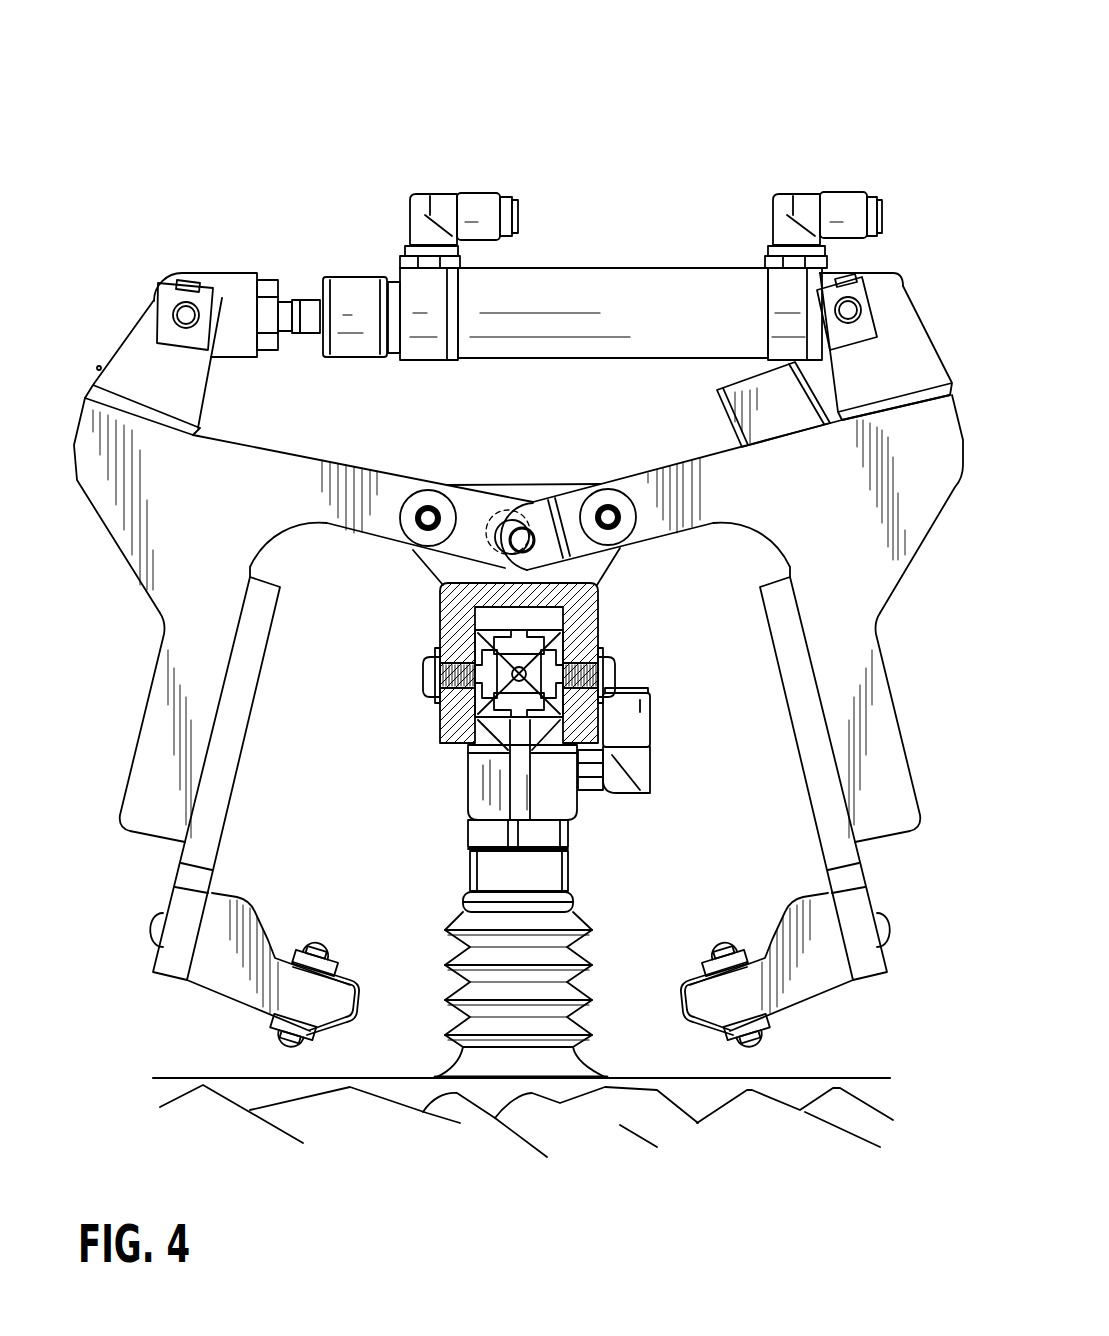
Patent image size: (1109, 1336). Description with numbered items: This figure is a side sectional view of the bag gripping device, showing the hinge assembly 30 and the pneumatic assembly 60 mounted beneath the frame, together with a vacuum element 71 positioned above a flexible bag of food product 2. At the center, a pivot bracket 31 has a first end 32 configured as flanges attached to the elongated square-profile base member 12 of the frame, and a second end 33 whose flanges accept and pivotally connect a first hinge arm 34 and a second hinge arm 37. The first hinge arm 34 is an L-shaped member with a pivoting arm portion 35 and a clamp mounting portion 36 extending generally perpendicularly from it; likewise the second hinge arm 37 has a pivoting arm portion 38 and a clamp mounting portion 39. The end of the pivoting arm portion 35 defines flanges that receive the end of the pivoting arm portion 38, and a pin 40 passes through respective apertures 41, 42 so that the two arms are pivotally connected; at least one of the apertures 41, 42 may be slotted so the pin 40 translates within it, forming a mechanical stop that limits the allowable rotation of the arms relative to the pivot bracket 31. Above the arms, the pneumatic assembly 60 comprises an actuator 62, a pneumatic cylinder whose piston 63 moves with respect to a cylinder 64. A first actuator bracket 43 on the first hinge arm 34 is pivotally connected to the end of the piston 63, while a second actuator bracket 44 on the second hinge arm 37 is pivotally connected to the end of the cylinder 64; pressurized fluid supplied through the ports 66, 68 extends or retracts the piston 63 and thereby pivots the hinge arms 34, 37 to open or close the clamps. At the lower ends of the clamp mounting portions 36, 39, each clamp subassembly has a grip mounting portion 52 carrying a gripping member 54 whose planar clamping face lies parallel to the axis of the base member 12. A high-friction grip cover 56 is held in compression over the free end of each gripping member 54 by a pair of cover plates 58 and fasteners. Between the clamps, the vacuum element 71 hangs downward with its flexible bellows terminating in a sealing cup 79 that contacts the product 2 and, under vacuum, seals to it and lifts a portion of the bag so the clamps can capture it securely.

The product 2 is at (857, 1077).
The base member 12 is at (567, 622).
The hinge assembly 30 is at (562, 476).
The pivot bracket 31 is at (516, 488).
The first end 32 is at (443, 733).
The second end 33 is at (520, 493).
The first hinge arm 34 is at (193, 467).
The pivoting arm portion 35 is at (383, 473).
The clamp mounting portion 36 is at (150, 728).
The second hinge arm 37 is at (915, 500).
The pivoting arm portion 38 is at (712, 473).
The clamp mounting portion 39 is at (883, 753).
The pin 40 is at (518, 538).
The aperture 41 is at (600, 562).
The aperture 42 is at (533, 545).
The first actuator bracket 43 is at (130, 353).
The second actuator bracket 44 is at (905, 354).
The grip mounting portion 52 is at (180, 905).
The gripping member 54 is at (217, 980).
The grip cover 56 is at (360, 990).
The cover plate 58 is at (327, 960).
The pneumatic assembly 60 is at (772, 88).
The actuator 62 is at (611, 241).
The piston 63 is at (287, 307).
The cylinder 64 is at (637, 277).
The port 66 is at (480, 196).
The port 68 is at (842, 193).
The vacuum element 71 is at (580, 917).
The sealing cup 79 is at (587, 1070).